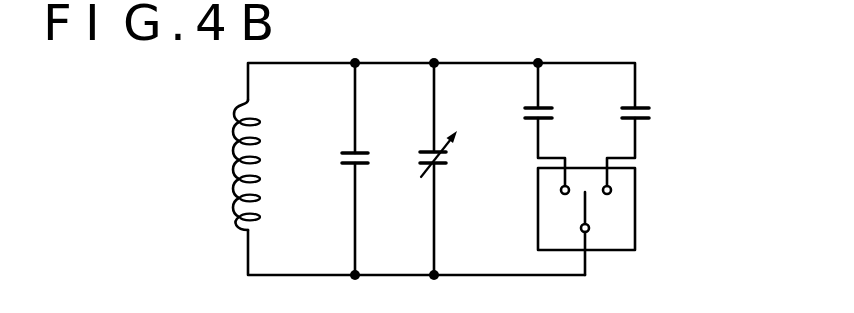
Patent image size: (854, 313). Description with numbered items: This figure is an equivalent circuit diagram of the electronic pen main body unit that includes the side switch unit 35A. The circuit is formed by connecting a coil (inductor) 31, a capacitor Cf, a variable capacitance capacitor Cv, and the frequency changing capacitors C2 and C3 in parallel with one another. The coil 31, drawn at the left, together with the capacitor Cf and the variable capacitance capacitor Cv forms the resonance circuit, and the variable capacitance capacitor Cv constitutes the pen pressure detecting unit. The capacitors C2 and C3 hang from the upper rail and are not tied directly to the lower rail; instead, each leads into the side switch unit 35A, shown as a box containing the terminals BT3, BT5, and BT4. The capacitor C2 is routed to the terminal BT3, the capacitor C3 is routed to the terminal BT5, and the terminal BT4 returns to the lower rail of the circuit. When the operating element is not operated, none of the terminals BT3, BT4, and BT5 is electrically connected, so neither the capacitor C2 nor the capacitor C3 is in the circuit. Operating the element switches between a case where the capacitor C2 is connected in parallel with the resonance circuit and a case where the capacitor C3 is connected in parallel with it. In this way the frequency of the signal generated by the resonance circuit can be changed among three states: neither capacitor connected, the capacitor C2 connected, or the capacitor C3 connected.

The coil (inductor) 31 is at (235, 153).
The capacitor Cf is at (341, 159).
The variable capacitance capacitor Cv is at (425, 161).
The frequency changing capacitor C2 is at (524, 117).
The frequency changing capacitor C3 is at (651, 113).
The side switch unit 35A is at (665, 184).
The terminal BT3 is at (561, 190).
The terminal BT5 is at (611, 190).
The terminal BT4 is at (589, 229).